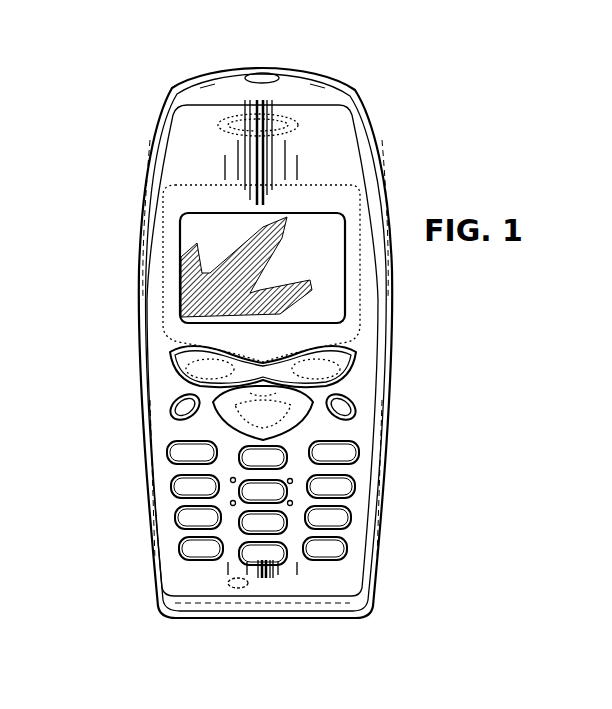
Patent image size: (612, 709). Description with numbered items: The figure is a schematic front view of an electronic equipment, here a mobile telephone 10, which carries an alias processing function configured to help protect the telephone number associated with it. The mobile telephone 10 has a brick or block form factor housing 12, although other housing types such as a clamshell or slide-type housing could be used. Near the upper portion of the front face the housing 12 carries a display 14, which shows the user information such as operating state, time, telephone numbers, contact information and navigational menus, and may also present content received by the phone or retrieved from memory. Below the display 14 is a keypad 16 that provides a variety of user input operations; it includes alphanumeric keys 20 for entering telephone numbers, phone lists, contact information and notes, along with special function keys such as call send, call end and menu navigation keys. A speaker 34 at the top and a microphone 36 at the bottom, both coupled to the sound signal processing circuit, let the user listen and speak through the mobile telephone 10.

The mobile telephone 10 is at (112, 80).
The housing 12 is at (153, 156).
The display 14 is at (188, 237).
The keypad 16 is at (164, 503).
The alphanumeric keys 20 is at (188, 448).
The speaker 34 is at (240, 127).
The microphone 36 is at (244, 588).